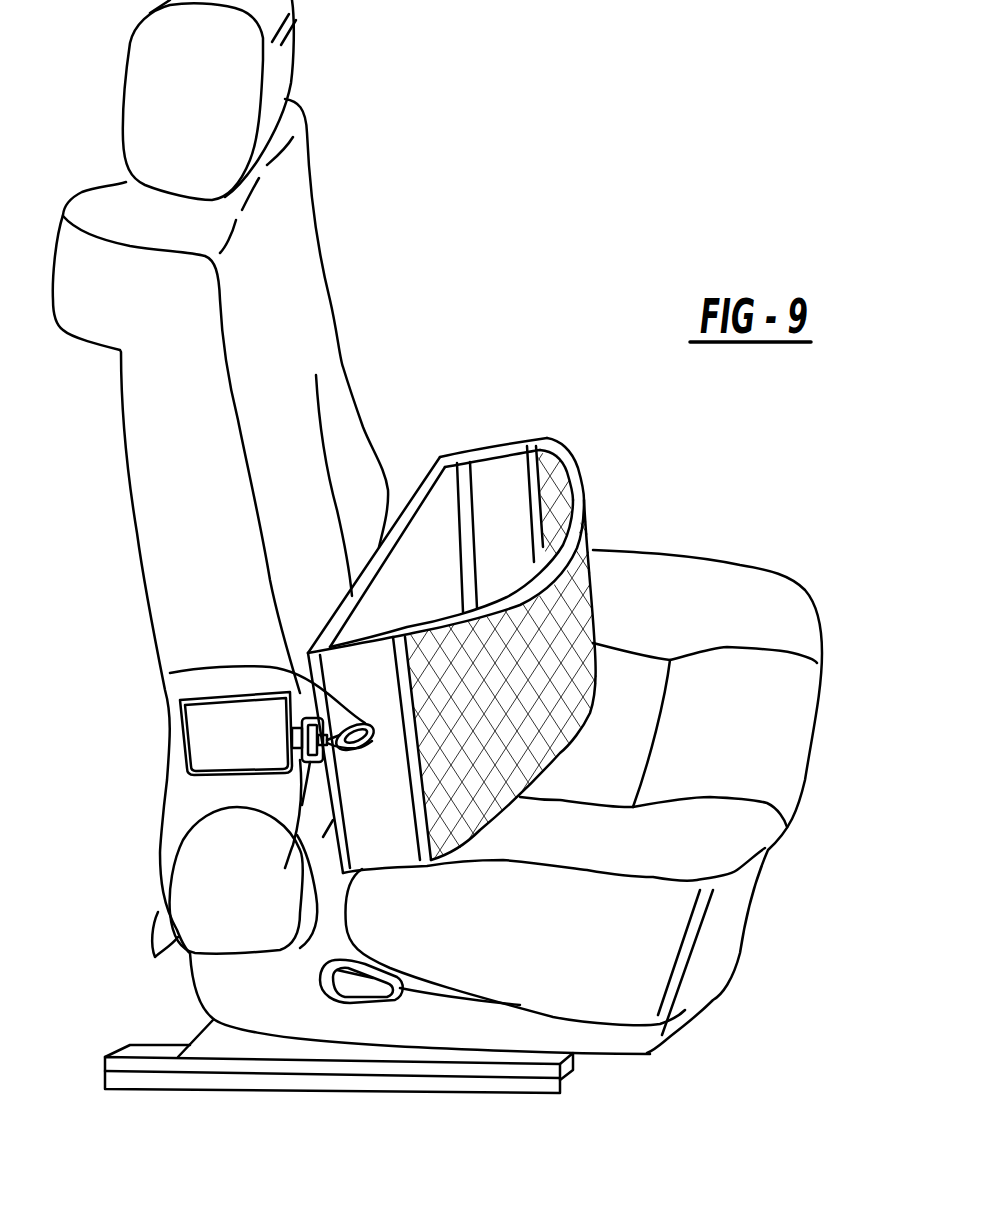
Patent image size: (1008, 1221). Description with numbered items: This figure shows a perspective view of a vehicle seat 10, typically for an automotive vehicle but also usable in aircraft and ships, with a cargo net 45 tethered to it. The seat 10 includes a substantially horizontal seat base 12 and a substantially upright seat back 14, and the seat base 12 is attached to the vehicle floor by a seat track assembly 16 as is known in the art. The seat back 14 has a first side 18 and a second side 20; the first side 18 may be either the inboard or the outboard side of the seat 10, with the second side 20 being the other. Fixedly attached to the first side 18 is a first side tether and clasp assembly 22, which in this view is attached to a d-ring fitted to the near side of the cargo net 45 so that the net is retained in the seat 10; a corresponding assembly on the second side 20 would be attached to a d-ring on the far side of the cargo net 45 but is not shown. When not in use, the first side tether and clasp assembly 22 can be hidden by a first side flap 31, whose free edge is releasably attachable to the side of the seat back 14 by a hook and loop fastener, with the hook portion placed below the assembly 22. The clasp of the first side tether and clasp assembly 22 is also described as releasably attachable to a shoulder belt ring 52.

The seat 10 is at (447, 310).
The seat base 12 is at (780, 763).
The seat back 14 is at (170, 590).
The seat track assembly 16 is at (163, 1082).
The first side 18 is at (170, 417).
The second side 20 is at (273, 274).
The first side tether and clasp assembly 22 is at (292, 800).
The first side flap 31 is at (217, 747).
The cargo net 45 is at (498, 497).
The shoulder belt ring 52 is at (170, 673).